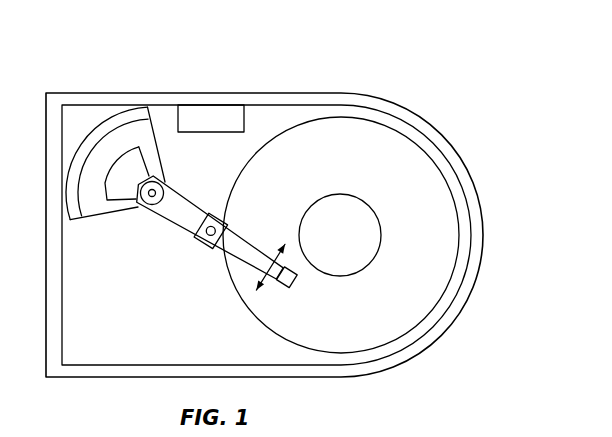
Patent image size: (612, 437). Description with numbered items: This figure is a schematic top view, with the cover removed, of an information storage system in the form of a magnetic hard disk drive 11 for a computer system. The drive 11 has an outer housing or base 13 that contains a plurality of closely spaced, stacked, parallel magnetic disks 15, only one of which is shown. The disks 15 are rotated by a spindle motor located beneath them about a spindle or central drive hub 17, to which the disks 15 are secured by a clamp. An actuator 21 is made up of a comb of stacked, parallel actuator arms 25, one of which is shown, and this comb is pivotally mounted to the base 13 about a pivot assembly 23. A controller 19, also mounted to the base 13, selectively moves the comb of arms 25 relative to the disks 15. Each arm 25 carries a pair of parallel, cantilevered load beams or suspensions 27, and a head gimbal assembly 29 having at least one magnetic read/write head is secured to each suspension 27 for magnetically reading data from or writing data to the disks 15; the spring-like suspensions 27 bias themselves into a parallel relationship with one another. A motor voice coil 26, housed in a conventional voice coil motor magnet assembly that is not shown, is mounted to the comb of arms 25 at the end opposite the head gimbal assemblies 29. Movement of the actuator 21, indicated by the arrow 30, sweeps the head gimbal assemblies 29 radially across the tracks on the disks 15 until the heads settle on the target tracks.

The magnetic hard disk drive 11 is at (425, 72).
The outer housing or base 13 is at (258, 94).
The magnetic disks 15 is at (425, 180).
The spindle or central drive hub 17 is at (342, 193).
The controller 19 is at (203, 115).
The actuator 21 is at (128, 324).
The pivot assembly 23 is at (162, 180).
The actuator arms 25 is at (180, 193).
The motor voice coil 26 is at (123, 114).
The load beams or suspensions 27 is at (237, 233).
The head gimbal assembly 29 is at (294, 287).
The arrow 30 is at (258, 282).